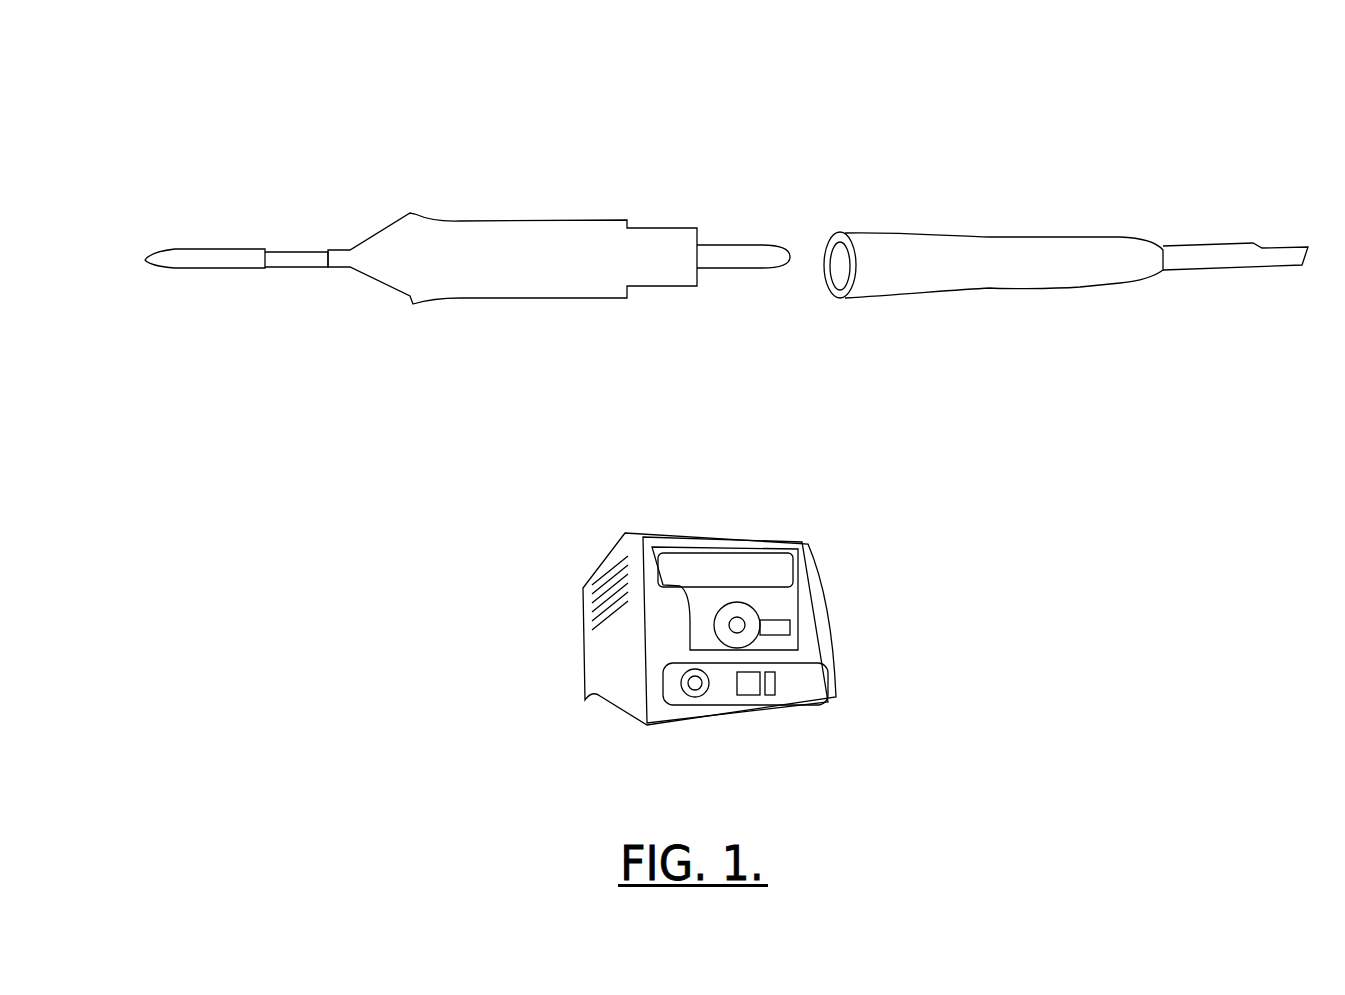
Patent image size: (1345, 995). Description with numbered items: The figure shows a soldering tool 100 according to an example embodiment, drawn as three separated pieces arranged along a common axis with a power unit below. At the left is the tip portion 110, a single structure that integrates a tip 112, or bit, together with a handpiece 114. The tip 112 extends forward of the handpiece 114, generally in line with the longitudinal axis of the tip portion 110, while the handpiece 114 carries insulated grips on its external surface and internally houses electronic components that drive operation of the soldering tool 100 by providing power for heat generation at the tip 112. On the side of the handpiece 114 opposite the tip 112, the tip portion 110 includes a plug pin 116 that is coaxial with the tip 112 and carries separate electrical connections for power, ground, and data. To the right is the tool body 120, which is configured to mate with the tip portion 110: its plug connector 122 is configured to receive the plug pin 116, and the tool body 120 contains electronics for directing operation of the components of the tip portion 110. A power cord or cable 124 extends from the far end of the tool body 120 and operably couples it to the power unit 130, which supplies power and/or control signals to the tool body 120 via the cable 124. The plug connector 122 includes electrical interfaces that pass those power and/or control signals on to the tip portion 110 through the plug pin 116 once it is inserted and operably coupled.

The soldering tool 100 is at (345, 122).
The tip portion 110 is at (350, 320).
The tip 112 is at (197, 268).
The handpiece 114 is at (533, 246).
The plug pin 116 is at (764, 258).
The tool body 120 is at (1066, 334).
The plug connector 122 is at (835, 255).
The cable 124 is at (1275, 260).
The power unit 130 is at (836, 618).